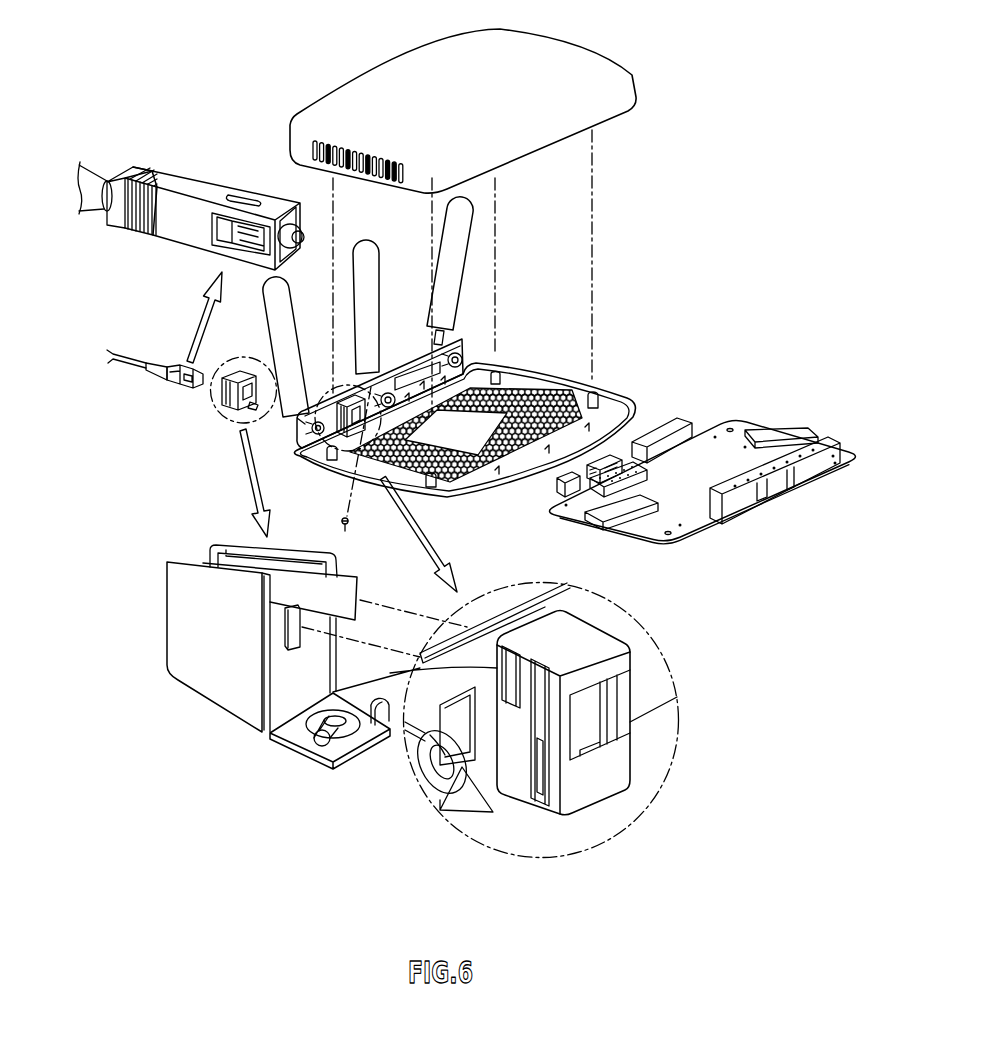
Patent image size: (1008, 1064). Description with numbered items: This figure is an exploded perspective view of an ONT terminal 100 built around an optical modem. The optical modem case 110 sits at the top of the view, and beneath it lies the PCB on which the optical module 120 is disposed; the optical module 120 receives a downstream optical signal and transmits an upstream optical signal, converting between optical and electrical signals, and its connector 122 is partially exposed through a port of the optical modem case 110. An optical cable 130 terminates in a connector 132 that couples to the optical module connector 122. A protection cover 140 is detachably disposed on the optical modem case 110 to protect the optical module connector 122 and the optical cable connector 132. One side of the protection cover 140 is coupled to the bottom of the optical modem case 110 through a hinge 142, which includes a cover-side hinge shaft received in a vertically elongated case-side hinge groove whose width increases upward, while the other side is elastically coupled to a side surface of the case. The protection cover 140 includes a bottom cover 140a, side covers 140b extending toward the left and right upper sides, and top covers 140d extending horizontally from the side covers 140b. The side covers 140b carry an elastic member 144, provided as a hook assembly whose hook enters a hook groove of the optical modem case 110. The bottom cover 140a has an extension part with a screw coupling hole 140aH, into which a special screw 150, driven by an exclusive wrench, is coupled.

The ONT terminal 100 is at (768, 293).
The optical modem case 110 is at (382, 66).
The optical module 120 is at (633, 477).
The optical module connector 122 is at (593, 470).
The optical cable 130 is at (88, 175).
The optical cable connector 132 is at (213, 190).
The protection cover 140 is at (228, 394).
The bottom cover 140a is at (294, 757).
The screw coupling hole 140aH is at (346, 745).
The side cover 140b is at (205, 627).
The top cover 140d is at (207, 570).
The hinge 142 is at (535, 802).
The elastic member 144 is at (278, 728).
The screw 150 is at (350, 527).
The element PCB is at (703, 481).